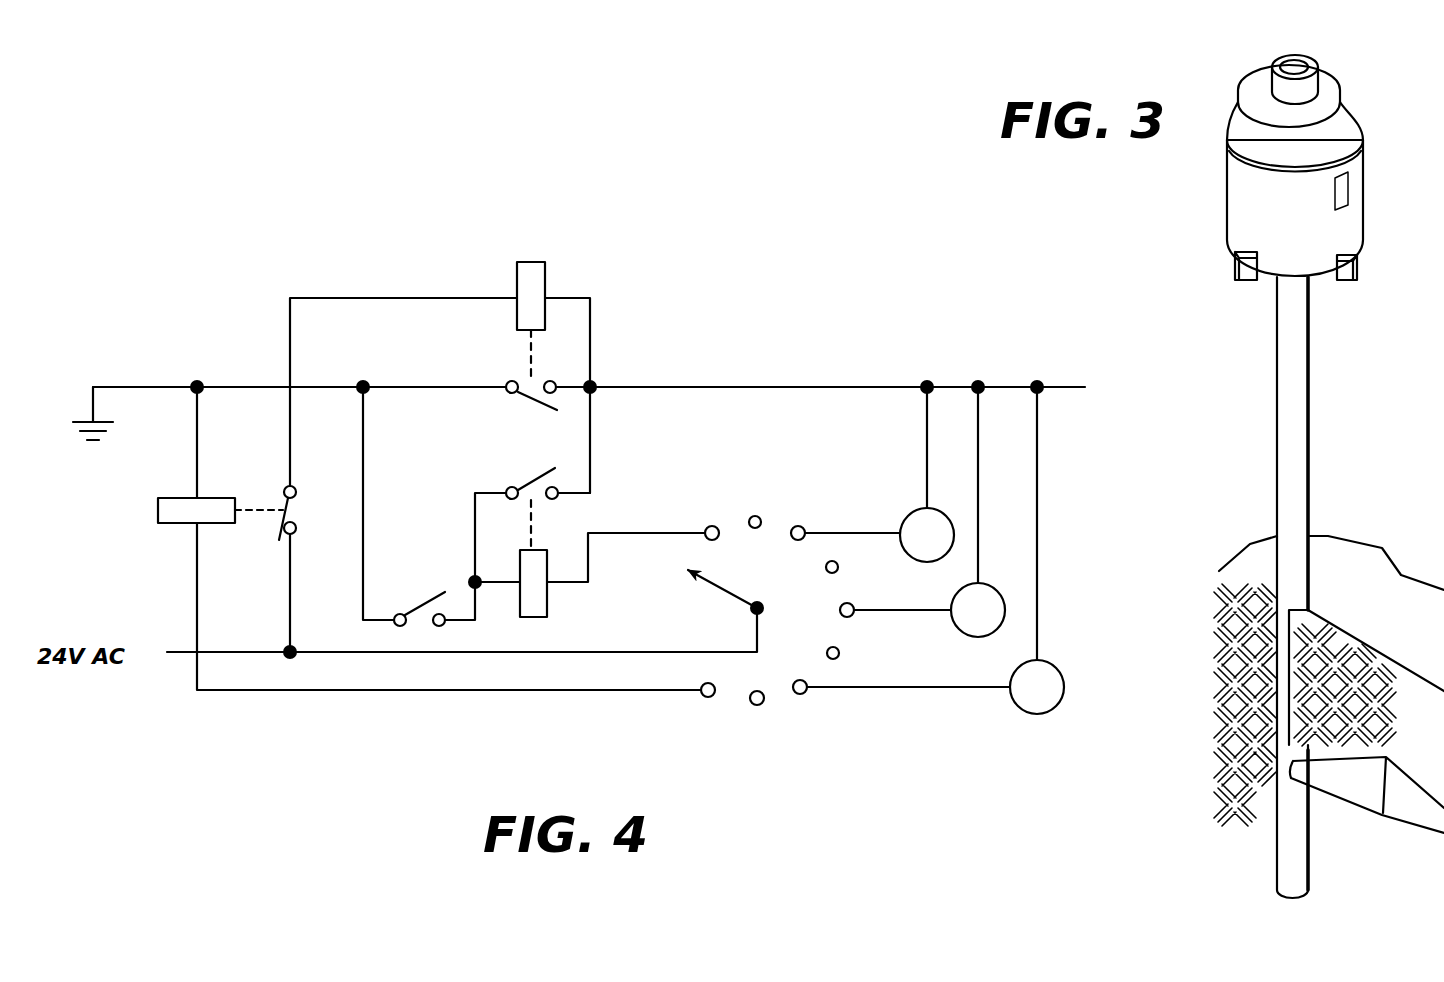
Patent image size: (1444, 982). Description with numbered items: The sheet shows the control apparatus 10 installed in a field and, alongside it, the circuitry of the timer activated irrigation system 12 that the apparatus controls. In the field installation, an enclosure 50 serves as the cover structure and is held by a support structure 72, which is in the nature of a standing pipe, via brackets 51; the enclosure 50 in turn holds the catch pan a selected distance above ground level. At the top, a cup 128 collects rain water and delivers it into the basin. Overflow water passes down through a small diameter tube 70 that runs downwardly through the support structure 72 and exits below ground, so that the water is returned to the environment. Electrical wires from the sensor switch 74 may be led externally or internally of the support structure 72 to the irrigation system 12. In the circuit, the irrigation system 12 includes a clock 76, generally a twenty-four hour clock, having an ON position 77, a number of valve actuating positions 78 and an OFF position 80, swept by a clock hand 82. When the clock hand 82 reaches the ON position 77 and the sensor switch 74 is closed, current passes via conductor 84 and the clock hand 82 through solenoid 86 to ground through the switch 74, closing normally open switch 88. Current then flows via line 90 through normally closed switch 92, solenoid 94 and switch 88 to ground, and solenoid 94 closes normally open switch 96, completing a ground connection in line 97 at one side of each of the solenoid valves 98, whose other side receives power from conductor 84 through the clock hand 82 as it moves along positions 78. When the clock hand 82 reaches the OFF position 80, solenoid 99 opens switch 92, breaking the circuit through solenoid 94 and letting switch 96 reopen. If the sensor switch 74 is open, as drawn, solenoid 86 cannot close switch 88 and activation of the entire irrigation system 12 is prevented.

In FIG. 3, the control apparatus 10 is at (1370, 141).
In FIG. 3, the cup 128 is at (1278, 53).
In FIG. 3, the enclosure 50 is at (1227, 202).
In FIG. 3, the brackets 51 is at (1243, 264).
In FIG. 3, the support structure 72 is at (1293, 471).
In FIG. 3, the small diameter tube 70 is at (1382, 812).
In FIG. 4, the line 97 is at (747, 386).
In FIG. 4, the solenoid 99 is at (155, 486).
In FIG. 4, the normally closed switch 92 is at (305, 506).
In FIG. 4, the line 90 is at (290, 582).
In FIG. 4, the conductor 84 is at (445, 653).
In FIG. 4, the solenoid 94 is at (508, 258).
In FIG. 4, the normally open switch 96 is at (525, 408).
In FIG. 4, the sensor switch 74 is at (424, 581).
In FIG. 4, the normally open switch 88 is at (523, 469).
In FIG. 4, the solenoid 86 is at (557, 609).
In FIG. 4, the ON position 77 is at (706, 527).
In FIG. 4, the valve actuating positions 78 is at (798, 526).
In FIG. 4, the solenoid valves 98 is at (912, 513).
In FIG. 4, the clock hand 82 is at (712, 583).
In FIG. 4, the OFF position 80 is at (703, 698).
In FIG. 4, the timer activated irrigation system 12 is at (757, 727).
In FIG. 4, the clock 76 is at (785, 702).